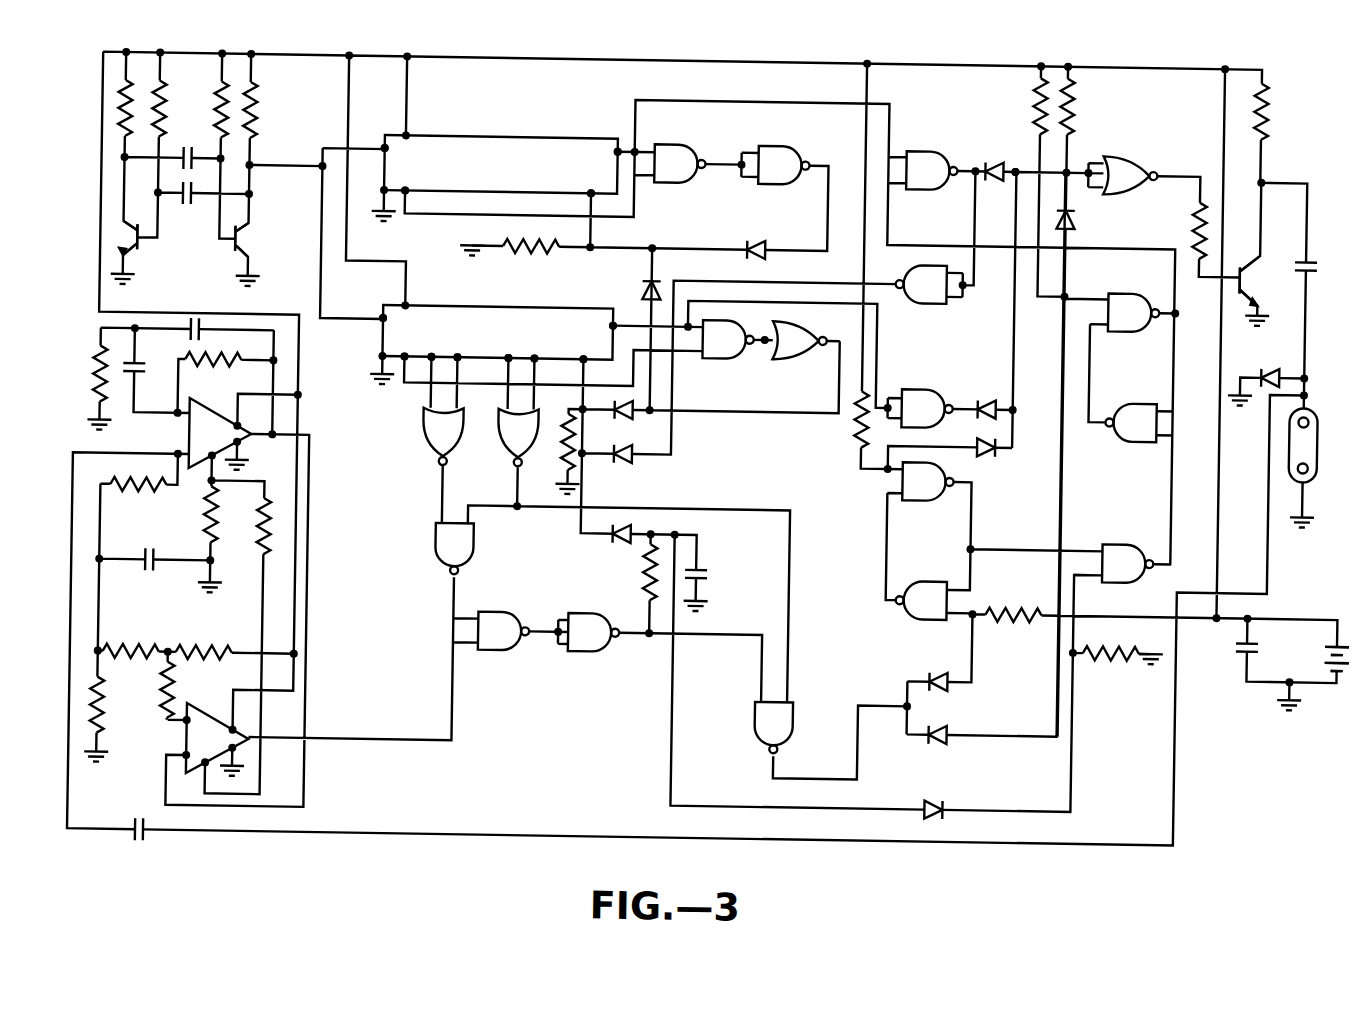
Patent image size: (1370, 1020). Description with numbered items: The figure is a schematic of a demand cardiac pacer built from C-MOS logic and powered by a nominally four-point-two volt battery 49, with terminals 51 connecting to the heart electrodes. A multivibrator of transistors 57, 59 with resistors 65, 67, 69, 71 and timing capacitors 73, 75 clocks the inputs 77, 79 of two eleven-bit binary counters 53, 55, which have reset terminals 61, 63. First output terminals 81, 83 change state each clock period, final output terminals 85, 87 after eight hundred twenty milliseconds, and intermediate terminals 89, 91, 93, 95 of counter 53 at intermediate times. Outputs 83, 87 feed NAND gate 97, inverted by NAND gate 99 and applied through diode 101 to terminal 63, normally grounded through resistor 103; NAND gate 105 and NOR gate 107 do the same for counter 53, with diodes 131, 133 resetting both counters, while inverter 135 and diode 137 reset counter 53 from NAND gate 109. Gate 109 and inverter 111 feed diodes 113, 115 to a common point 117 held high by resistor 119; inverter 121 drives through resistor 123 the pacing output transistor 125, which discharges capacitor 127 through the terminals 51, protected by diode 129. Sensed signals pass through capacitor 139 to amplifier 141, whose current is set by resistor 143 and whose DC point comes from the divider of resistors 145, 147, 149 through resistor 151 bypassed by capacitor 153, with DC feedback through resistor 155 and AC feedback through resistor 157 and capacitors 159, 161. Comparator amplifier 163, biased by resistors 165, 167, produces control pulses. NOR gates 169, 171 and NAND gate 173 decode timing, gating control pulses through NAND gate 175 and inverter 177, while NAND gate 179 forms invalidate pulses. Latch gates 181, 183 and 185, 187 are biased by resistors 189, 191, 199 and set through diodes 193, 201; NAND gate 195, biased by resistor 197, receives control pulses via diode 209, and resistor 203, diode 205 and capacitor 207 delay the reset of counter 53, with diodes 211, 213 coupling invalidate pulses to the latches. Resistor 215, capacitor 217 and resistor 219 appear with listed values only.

The battery 49 is at (1332, 630).
The terminals 51 is at (1324, 402).
The binary counter 53 is at (482, 298).
The binary counter 55 is at (503, 128).
The multivibrator clock transistor 57 is at (147, 244).
The multivibrator clock transistor 59 is at (232, 256).
The reset terminal 61 is at (588, 348).
The reset terminal 63 is at (590, 182).
The resistor 65 is at (120, 100).
The resistor 67 is at (165, 88).
The resistor 69 is at (220, 98).
The resistor 71 is at (256, 112).
The timing capacitor 73 is at (200, 150).
The timing capacitor 75 is at (200, 196).
The input 77 is at (393, 312).
The input 79 is at (392, 143).
The first output terminal 81 is at (410, 349).
The first output terminal 83 is at (412, 182).
The final output terminal 85 is at (612, 316).
The final output terminal 87 is at (616, 144).
The intermediate output terminal 89 is at (437, 348).
The intermediate output terminal 91 is at (463, 349).
The intermediate output terminal 93 is at (514, 348).
The intermediate output terminal 95 is at (540, 348).
The NAND gate 97 is at (683, 134).
The NAND gate 99 is at (790, 134).
The diode 101 is at (758, 230).
The resistor 103 is at (533, 243).
The NAND gate 105 is at (728, 348).
The NOR gate 107 is at (800, 348).
The NAND gate 109 is at (942, 136).
The inverter 111 is at (918, 374).
The diode 113 is at (990, 146).
The diode 115 is at (994, 384).
The common point 117 is at (1021, 150).
The resistor 119 is at (1076, 94).
The inverter 121 is at (1126, 142).
The resistor 123 is at (1196, 204).
The pacing output transistor 125 is at (1244, 244).
The capacitor 127 is at (1316, 244).
The diode 129 is at (1276, 350).
The diode 131 is at (630, 408).
The diode 133 is at (658, 270).
The inverter 135 is at (926, 288).
The diode 137 is at (640, 450).
The capacitor 139 is at (148, 816).
The amplifier 141 is at (206, 394).
The resistor 143 is at (214, 518).
The resistor 145 is at (208, 644).
The resistor 147 is at (150, 644).
The resistor 149 is at (112, 704).
The resistor 151 is at (130, 486).
The capacitor 153 is at (164, 552).
The resistor 155 is at (240, 360).
The resistor 157 is at (96, 382).
The capacitor 159 is at (145, 360).
The capacitor 161 is at (209, 330).
The amplifier 163 is at (198, 706).
The resistor 165 is at (266, 546).
The resistor 167 is at (168, 714).
The NOR gate 169 is at (430, 438).
The NOR gate 171 is at (506, 444).
The NAND gate 173 is at (444, 544).
The NAND gate 175 is at (498, 604).
The gate 177 is at (600, 604).
The NAND gate 179 is at (805, 710).
The NAND gate 181 is at (1152, 276).
The NAND gate 183 is at (1154, 372).
The NAND gate 185 is at (940, 484).
The NAND gate 187 is at (942, 570).
The resistor 189 is at (858, 430).
The resistor 191 is at (1040, 590).
The diode 193 is at (1000, 440).
The NAND gate 195 is at (1136, 526).
The resistor 197 is at (1138, 634).
The resistor 199 is at (1036, 84).
The diode 201 is at (1082, 210).
The resistor 203 is at (653, 568).
The diode 205 is at (618, 532).
The capacitor 207 is at (722, 562).
The diode 209 is at (952, 784).
The diode 211 is at (958, 712).
The diode 213 is at (944, 658).
The resistor 215 is at (1268, 96).
The capacitor 217 is at (1248, 630).
The resistor 219 is at (568, 444).